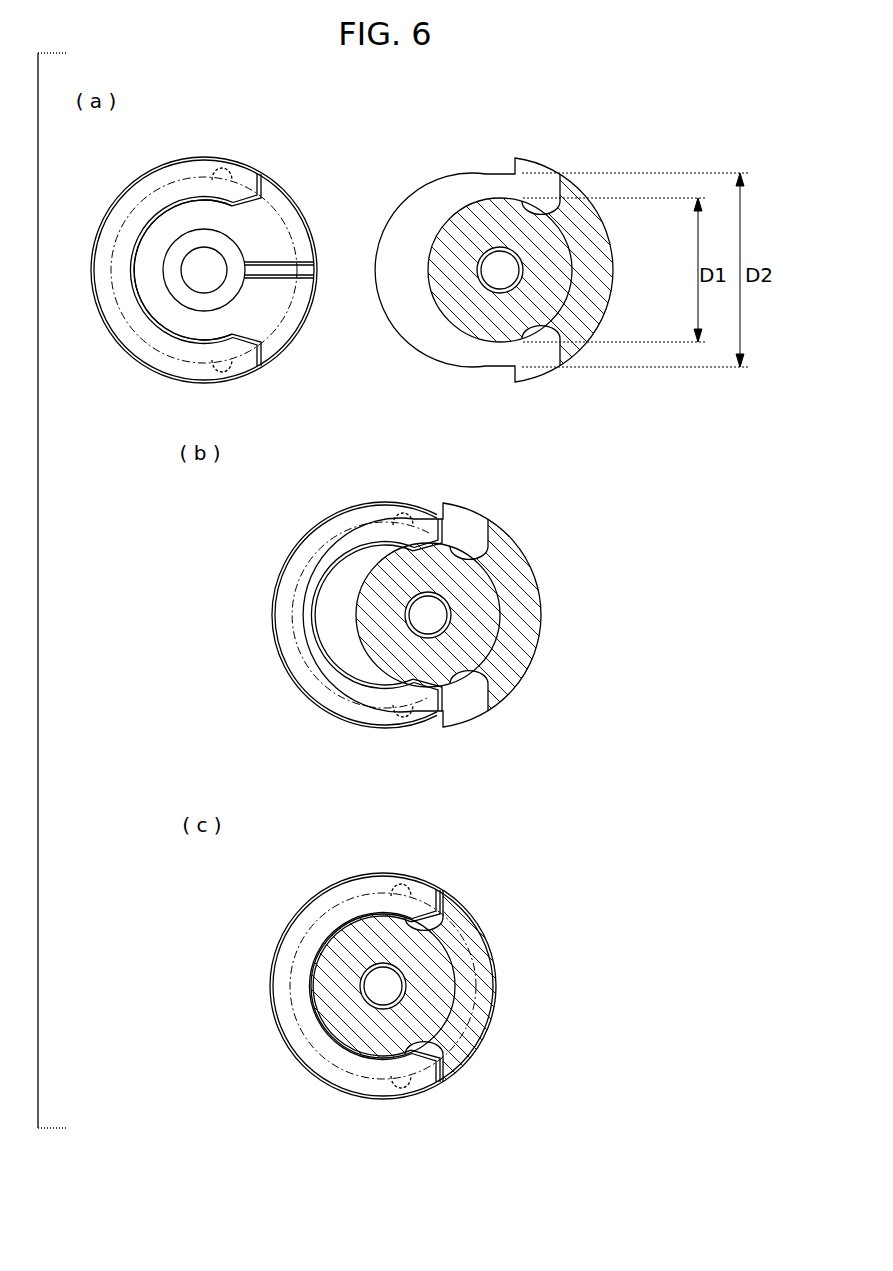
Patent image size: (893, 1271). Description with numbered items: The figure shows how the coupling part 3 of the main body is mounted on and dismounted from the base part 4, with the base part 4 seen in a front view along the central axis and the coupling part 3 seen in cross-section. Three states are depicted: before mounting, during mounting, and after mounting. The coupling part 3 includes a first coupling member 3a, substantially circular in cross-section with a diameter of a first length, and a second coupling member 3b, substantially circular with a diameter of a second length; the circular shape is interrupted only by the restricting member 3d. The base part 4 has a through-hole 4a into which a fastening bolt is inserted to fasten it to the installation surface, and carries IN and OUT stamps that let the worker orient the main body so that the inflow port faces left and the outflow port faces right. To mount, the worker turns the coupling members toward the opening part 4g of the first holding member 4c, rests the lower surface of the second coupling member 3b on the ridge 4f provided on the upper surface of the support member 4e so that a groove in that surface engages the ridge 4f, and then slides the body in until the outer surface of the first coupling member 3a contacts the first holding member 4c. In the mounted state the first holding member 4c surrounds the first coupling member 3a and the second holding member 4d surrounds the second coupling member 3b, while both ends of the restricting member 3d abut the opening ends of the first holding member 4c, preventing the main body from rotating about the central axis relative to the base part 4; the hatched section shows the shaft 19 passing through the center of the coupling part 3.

The coupling part 3 is at (441, 606).
The first coupling member 3a is at (485, 192).
The second coupling member 3b is at (443, 190).
The restricting member 3d is at (602, 233).
The base part 4 is at (301, 593).
The through-hole 4a is at (199, 277).
The first holding member 4c is at (265, 188).
The second holding member 4d is at (226, 164).
The support member 4e is at (283, 216).
The ridge 4f is at (297, 280).
The opening part 4g is at (268, 310).
The shaft 19 is at (497, 272).